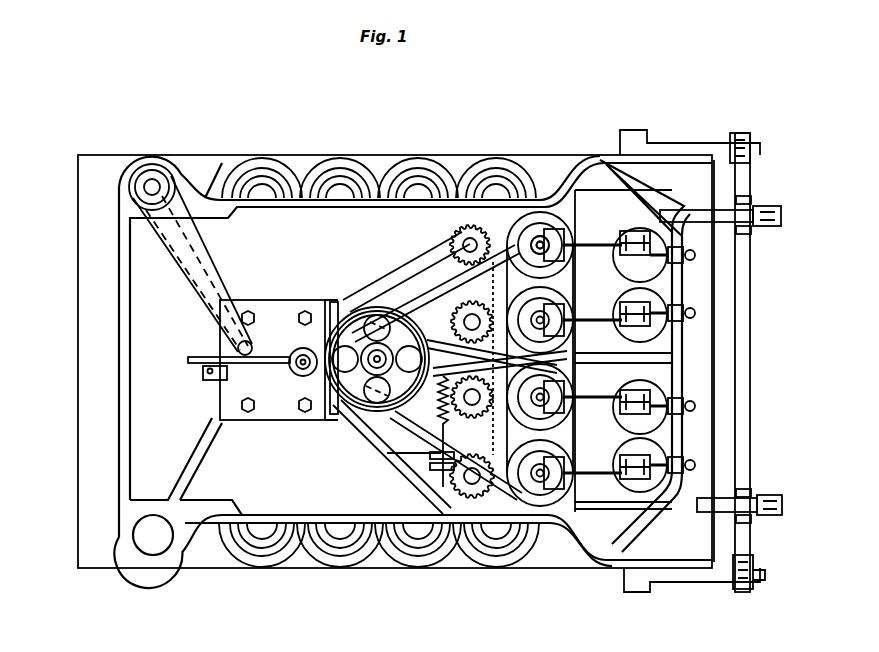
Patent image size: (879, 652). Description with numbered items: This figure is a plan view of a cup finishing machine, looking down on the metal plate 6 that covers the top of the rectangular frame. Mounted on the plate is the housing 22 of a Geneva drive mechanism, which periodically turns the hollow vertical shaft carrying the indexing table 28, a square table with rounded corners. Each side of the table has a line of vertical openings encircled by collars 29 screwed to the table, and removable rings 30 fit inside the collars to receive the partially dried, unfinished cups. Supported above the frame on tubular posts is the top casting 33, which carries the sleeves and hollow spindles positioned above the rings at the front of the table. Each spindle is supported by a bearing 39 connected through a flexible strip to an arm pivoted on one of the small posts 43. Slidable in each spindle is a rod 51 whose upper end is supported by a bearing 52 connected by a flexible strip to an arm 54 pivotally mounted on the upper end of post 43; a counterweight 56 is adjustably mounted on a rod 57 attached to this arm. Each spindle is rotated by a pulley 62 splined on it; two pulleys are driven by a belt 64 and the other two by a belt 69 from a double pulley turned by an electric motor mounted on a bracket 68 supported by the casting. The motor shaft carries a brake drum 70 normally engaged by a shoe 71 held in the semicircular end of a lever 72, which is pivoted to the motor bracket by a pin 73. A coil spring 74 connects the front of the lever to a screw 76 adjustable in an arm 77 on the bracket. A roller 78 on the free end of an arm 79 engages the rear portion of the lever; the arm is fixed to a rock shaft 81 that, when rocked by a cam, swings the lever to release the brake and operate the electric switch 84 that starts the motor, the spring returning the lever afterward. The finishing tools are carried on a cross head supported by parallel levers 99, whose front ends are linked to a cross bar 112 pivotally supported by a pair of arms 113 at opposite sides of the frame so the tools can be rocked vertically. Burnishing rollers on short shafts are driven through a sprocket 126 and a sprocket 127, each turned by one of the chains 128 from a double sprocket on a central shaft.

The metal plate 6 is at (80, 204).
The housing 22 is at (118, 345).
The indexing table 28 is at (377, 560).
The collars 29 is at (268, 562).
The rings 30 is at (333, 553).
The top casting 33 is at (123, 282).
The bearing 39 is at (540, 240).
The small posts 43 is at (650, 395).
The rod 51 is at (541, 230).
The bearing 52 is at (528, 480).
The arm 54 is at (600, 470).
The counterweight 56 is at (688, 250).
The rod 57 is at (690, 315).
The pulley 62 is at (515, 512).
The belt 64 is at (472, 490).
The bracket 68 is at (335, 320).
The belt 69 is at (515, 215).
The brake drum 70 is at (295, 557).
The shoe 71 is at (362, 315).
The lever 72 is at (292, 345).
The pin 73 is at (295, 376).
The coil spring 74 is at (393, 455).
The screw 76 is at (440, 480).
The arm 77 is at (353, 567).
The roller 78 is at (255, 335).
The arm 79 is at (165, 230).
The rock shaft 81 is at (152, 178).
The electric switch 84 is at (215, 372).
The levers 99 is at (698, 213).
The cross bar 112 is at (752, 370).
The arms 113 is at (686, 148).
The sprocket 126 is at (462, 545).
The sprocket 127 is at (472, 228).
The chains 128 is at (455, 250).